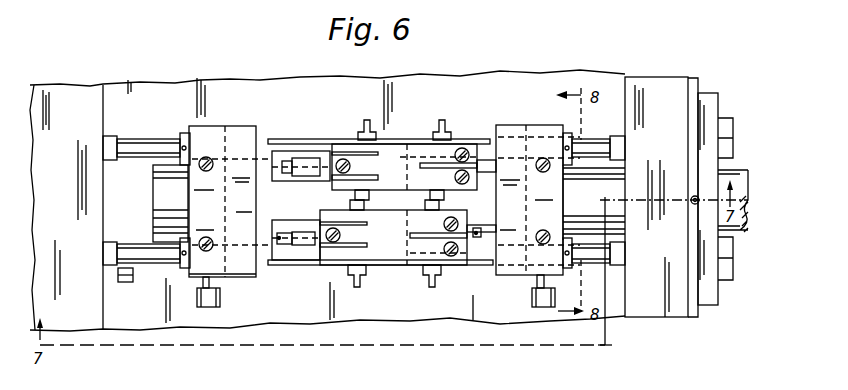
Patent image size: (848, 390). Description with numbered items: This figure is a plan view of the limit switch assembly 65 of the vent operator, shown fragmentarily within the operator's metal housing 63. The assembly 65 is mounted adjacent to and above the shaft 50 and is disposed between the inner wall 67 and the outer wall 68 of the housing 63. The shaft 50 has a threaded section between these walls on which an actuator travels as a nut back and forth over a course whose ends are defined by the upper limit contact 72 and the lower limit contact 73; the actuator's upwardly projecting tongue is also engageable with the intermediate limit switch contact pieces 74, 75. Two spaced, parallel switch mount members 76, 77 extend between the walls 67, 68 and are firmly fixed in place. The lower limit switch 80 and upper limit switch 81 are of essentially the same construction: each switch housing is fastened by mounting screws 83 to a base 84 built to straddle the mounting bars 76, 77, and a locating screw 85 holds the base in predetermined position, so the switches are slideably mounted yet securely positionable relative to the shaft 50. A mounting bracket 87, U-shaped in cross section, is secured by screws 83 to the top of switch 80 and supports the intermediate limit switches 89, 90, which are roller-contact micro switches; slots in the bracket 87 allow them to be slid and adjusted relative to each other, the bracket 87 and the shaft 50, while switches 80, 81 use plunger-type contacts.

The shaft 50 is at (165, 194).
The metal housing 63 is at (218, 78).
The limit switch assembly 65 is at (327, 135).
The inner wall 67 is at (660, 82).
The outer wall 68 is at (62, 84).
The upper limit contact 72 is at (277, 234).
The lower limit contact 73 is at (493, 239).
The intermediate limit switch contact piece 74 is at (278, 240).
The intermediate limit switch contact piece 75 is at (292, 161).
The switch mount member 76 is at (143, 262).
The switch mount member 77 is at (140, 137).
The lower limit switch 80 is at (236, 126).
The upper limit switch 81 is at (500, 128).
The mounting screws 83 is at (207, 171).
The base 84 is at (225, 278).
The locating screw 85 is at (215, 302).
The mounting bracket 87 is at (272, 265).
The intermediate limit switch 89 is at (388, 251).
The intermediate limit switch 90 is at (403, 145).